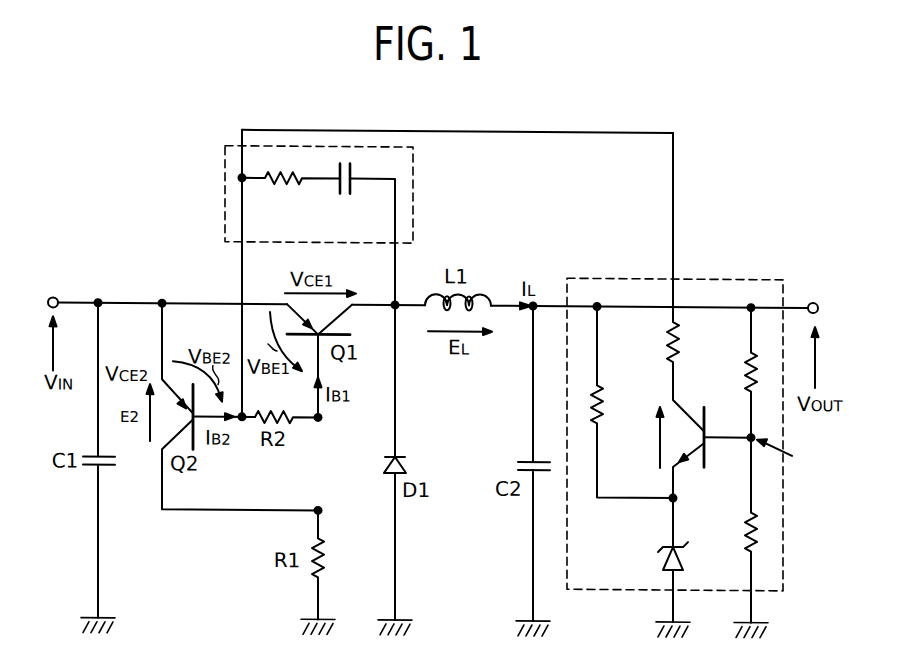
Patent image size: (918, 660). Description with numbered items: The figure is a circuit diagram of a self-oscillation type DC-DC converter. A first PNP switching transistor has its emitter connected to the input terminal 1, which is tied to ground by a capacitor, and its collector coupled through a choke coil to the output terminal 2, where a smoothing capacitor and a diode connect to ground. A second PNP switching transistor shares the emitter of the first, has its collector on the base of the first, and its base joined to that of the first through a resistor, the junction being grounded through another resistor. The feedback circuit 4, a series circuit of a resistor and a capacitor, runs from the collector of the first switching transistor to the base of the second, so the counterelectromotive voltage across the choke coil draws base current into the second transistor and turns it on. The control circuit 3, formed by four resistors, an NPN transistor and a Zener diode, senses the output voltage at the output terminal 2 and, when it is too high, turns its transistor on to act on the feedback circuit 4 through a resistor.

The input terminal 1 is at (56, 296).
The output terminal 2 is at (813, 300).
The control circuit 3 is at (722, 277).
The feedback circuit 4 is at (226, 147).